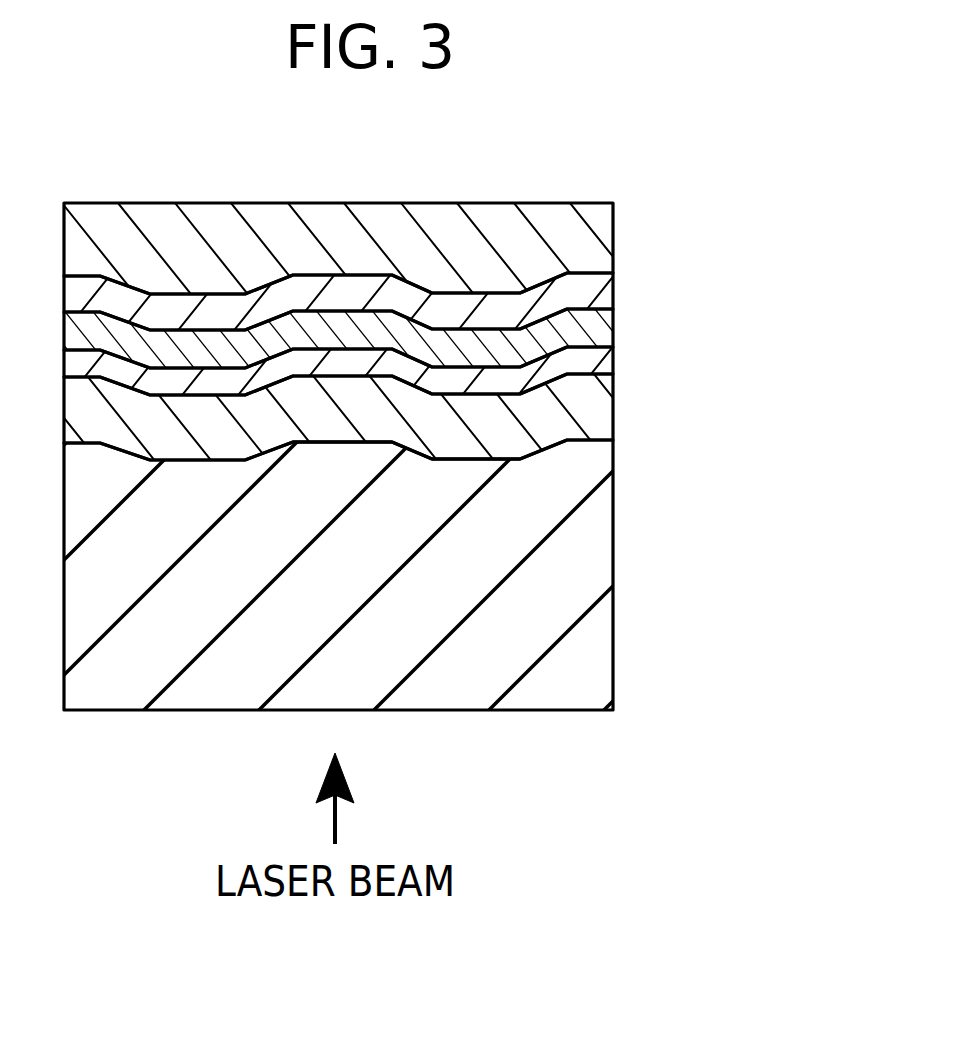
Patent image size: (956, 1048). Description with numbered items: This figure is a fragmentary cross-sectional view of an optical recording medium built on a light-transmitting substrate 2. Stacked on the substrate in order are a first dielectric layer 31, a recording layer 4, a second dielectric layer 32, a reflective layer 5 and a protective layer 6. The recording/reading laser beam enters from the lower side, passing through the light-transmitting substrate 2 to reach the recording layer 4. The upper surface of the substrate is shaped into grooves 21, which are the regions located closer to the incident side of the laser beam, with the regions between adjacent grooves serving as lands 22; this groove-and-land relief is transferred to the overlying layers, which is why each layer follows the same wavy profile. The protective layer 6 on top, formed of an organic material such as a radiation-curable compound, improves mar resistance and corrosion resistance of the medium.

The light-transmitting substrate 2 is at (614, 564).
The grooves 21 is at (459, 462).
The lands 22 is at (339, 445).
The first dielectric layer 31 is at (614, 410).
The recording layer 4 is at (614, 361).
The second dielectric layer 32 is at (614, 322).
The reflective layer 5 is at (614, 297).
The protective layer 6 is at (614, 240).